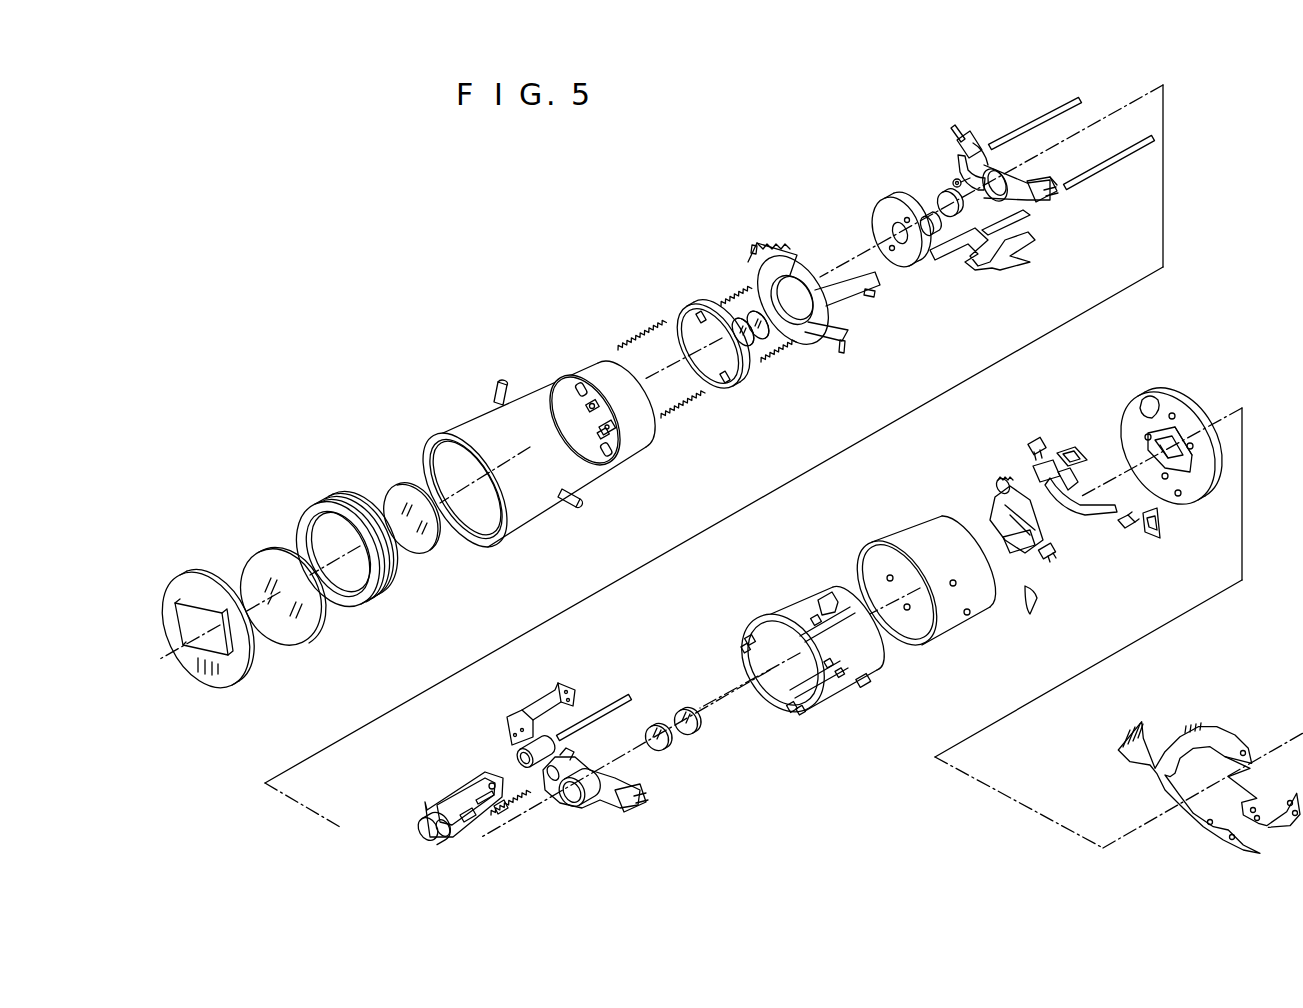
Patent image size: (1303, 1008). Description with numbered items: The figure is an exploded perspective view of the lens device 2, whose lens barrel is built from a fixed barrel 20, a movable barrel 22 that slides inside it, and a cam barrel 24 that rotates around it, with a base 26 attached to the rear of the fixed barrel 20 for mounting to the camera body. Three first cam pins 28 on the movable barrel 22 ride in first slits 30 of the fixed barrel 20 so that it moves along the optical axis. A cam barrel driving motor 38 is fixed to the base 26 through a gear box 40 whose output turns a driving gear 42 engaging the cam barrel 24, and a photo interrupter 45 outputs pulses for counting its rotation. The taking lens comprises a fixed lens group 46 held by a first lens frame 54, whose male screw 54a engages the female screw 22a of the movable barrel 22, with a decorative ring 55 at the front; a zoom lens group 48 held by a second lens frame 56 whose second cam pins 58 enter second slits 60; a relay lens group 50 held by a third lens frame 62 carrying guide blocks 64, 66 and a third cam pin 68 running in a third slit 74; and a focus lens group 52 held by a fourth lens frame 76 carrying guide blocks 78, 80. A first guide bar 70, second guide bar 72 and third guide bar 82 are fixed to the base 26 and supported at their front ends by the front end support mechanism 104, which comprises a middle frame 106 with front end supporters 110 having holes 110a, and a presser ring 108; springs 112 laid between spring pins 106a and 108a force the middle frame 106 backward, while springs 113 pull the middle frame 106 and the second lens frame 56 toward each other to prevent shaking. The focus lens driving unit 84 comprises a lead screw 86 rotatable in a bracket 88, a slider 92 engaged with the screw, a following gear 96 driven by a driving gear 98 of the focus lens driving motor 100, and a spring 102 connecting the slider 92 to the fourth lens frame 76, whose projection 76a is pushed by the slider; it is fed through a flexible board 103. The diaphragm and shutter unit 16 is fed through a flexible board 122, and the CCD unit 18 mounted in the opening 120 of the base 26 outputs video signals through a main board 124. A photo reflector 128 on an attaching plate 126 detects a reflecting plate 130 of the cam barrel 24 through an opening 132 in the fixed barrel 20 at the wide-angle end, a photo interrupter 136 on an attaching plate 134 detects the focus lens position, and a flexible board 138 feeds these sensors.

The lens device 2 is at (290, 302).
The diaphragm and shutter unit 16 is at (874, 224).
The CCD unit 18 is at (1150, 404).
The fixed barrel 20 is at (810, 647).
The movable barrel 22 is at (517, 460).
The female screw 22a is at (442, 457).
The cam barrel 24 is at (896, 545).
The base 26 is at (1168, 442).
The first cam pins 28 is at (572, 503).
The first slits 30 is at (815, 615).
The cam barrel driving motor 38 is at (1018, 552).
The gear box 40 is at (1009, 533).
The driving gear 42 is at (1010, 486).
The photo interrupter 45 is at (1050, 557).
The fixed lens group 46 is at (262, 583).
The zoom lens group 48 is at (760, 342).
The relay lens group 50 is at (940, 198).
The focus lens group 52 is at (690, 735).
The first lens frame 54 is at (331, 532).
The male screw 54a is at (348, 500).
The decorative ring 55 is at (192, 590).
The second lens frame 56 is at (816, 302).
The second cam pins 58 is at (760, 257).
The second slits 60 is at (742, 647).
The third lens frame 62 is at (956, 144).
The guide block 64 is at (953, 181).
The guide block 66 is at (1050, 205).
The third cam pin 68 is at (956, 130).
The first guide bar 70 is at (1013, 128).
The second guide bar 72 is at (1100, 160).
The third slit 74 is at (827, 615).
The fourth lens frame 76 is at (619, 802).
The projection 76a is at (655, 750).
The guide block 78 is at (518, 754).
The guide block 80 is at (642, 812).
The third guide bar 82 is at (600, 704).
The focus lens driving unit 84 is at (525, 780).
The lead screw 86 is at (500, 812).
The bracket 88 is at (458, 784).
The slider 92 is at (482, 805).
The following gear 96 is at (420, 830).
The driving gear 98 is at (440, 835).
The focus lens driving motor 100 is at (466, 822).
The spring 102 is at (522, 812).
The flexible board 103 is at (532, 705).
The front end support mechanism 104 is at (594, 377).
The middle frame 106 is at (594, 410).
The spring pins 106a is at (578, 388).
The presser ring 108 is at (680, 333).
The spring pins 108a is at (698, 314).
The front end supporters 110 is at (590, 404).
The holes 110a is at (600, 425).
The springs 112 is at (625, 343).
The springs 113 is at (735, 296).
The opening 120 is at (1165, 462).
The flexible board 122 is at (1010, 258).
The main board 124 is at (1142, 773).
The attaching plate 126 is at (1158, 540).
The photo reflector 128 is at (1125, 529).
The reflecting plate 130 is at (1031, 614).
The opening 132 is at (870, 684).
The attaching plate 134 is at (1070, 450).
The photo interrupter 136 is at (1030, 447).
The flexible board 138 is at (1080, 515).